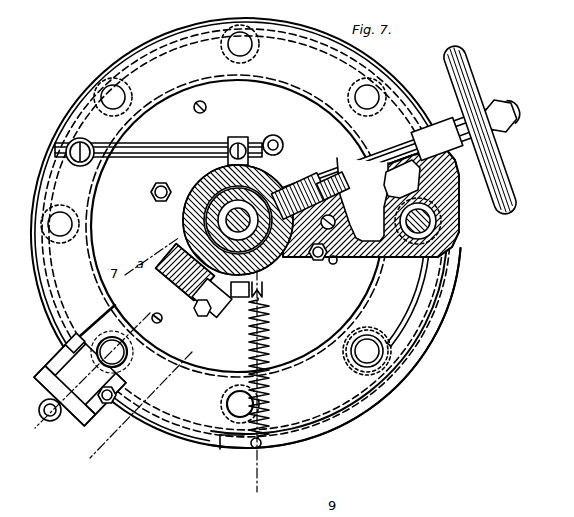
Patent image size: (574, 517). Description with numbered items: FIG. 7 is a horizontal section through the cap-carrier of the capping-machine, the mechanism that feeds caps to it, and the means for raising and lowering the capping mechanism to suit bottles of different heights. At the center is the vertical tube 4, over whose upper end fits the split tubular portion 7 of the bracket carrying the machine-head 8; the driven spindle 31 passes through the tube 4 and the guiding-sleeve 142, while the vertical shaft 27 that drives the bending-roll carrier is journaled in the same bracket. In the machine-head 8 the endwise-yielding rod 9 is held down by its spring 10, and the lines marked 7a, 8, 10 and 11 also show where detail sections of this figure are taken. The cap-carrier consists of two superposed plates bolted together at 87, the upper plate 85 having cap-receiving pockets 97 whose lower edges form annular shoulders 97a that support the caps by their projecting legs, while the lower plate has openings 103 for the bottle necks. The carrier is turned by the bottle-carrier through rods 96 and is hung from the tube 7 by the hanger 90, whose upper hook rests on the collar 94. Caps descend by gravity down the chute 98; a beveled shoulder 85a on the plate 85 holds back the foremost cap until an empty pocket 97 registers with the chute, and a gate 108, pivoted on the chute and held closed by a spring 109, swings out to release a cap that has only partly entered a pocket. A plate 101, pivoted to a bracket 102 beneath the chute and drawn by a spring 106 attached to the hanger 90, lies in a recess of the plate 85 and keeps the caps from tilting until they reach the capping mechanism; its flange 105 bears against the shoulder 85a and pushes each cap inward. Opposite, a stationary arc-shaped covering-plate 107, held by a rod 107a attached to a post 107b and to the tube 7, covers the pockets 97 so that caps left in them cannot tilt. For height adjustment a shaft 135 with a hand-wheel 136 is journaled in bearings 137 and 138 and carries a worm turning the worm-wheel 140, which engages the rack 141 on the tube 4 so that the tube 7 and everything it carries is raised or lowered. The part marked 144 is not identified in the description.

The vertical tube 4 is at (190, 222).
The split tubular portion 7 is at (287, 295).
The section line 7a is at (402, 179).
The machine-head 8 is at (96, 450).
The endwise-yielding rod 9 is at (439, 222).
The spring 10 is at (36, 438).
The section line 11 is at (266, 488).
The vertical shaft 27 is at (336, 260).
The vertical shaft or spindle 31 is at (290, 182).
The upper plate of cap-carrier 85 is at (135, 60).
The annular shoulder 85a is at (392, 340).
The bolts 87 is at (157, 312).
The hanger 90 is at (232, 312).
The collar 94 is at (200, 232).
The rods 96 is at (287, 133).
The cap-receiving pockets 97 is at (255, 48).
The annular shoulders 97a is at (376, 366).
The chute 98 is at (104, 408).
The plate 101 is at (450, 322).
The bracket 102 is at (52, 421).
The openings 103 is at (380, 93).
The guide or flange 105 is at (190, 445).
The spring 106 is at (270, 399).
The arc-shaped covering-plate 107 is at (308, 14).
The rod 107a is at (208, 145).
The post 107b is at (72, 145).
The gate 108 is at (120, 365).
The spring 109 is at (68, 347).
The shaft 135 is at (362, 199).
The hand-wheel 136 is at (484, 100).
The bearing 137 is at (435, 124).
The bearing 138 is at (368, 163).
The worm-wheel 140 is at (330, 178).
The rack 141 is at (284, 268).
The guiding-sleeve 142 is at (300, 282).
The screw 144 is at (320, 232).